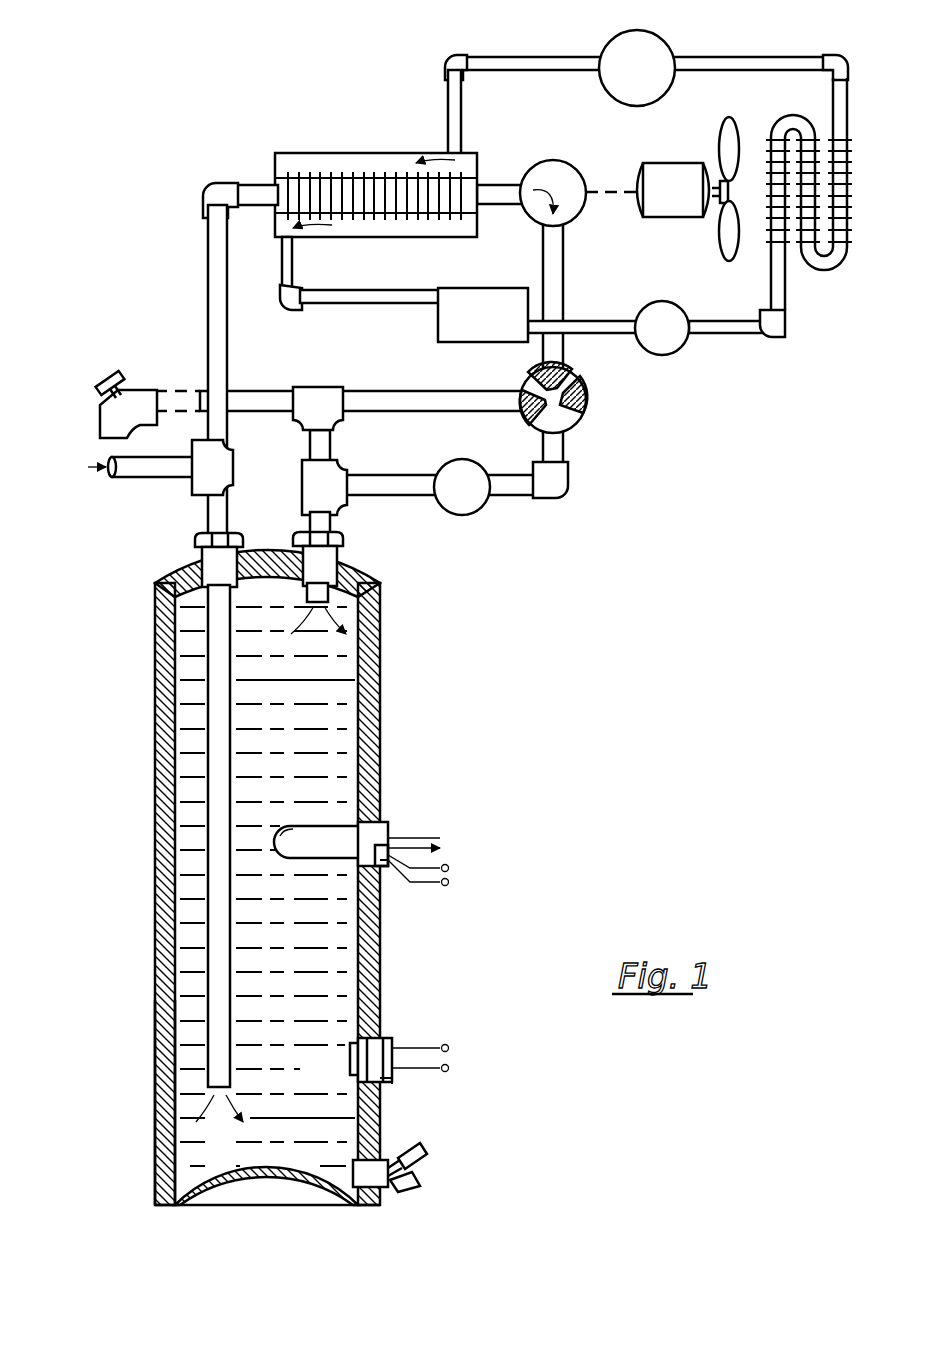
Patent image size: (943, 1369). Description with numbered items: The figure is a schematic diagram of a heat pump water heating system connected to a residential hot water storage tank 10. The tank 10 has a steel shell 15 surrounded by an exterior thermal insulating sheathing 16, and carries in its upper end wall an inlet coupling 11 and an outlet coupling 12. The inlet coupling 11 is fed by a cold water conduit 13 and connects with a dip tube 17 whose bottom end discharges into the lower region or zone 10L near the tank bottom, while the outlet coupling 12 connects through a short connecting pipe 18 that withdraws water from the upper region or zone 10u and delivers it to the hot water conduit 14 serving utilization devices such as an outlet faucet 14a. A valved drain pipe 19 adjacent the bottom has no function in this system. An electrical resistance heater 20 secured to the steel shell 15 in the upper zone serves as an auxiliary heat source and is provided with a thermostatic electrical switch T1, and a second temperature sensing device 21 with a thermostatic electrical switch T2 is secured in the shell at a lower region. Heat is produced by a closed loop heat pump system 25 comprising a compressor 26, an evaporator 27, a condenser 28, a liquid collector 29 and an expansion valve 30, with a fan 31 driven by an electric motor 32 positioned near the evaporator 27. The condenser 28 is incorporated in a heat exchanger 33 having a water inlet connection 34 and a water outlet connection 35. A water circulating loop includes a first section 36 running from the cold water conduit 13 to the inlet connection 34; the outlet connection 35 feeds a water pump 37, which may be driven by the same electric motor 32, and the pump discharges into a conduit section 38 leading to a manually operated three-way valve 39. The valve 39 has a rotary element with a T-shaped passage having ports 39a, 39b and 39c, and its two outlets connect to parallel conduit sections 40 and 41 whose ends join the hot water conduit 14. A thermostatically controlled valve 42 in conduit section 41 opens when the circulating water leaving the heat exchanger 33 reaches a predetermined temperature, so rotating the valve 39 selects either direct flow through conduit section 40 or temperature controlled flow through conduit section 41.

The hot water storage tank 10 is at (152, 789).
The upper region or zone 10u is at (337, 687).
The lower region or zone 10L is at (210, 1133).
The inlet coupling 11 is at (218, 558).
The outlet coupling 12 is at (322, 557).
The cold water conduit 13 is at (170, 470).
The hot water conduit 14 is at (273, 400).
The outlet faucet 14a is at (137, 384).
The steel shell 15 is at (180, 852).
The exterior thermal insulating sheathing 16 is at (165, 1078).
The dip tube 17 is at (225, 897).
The connecting pipe 18 is at (331, 597).
The valved drain pipe 19 is at (396, 1186).
The electrical resistance heater 20 is at (286, 848).
The second temperature sensing device 21 is at (352, 1062).
The heat pump system 25 is at (528, 52).
The compressor 26 is at (664, 46).
The evaporator 27 is at (820, 262).
The condenser 28 is at (404, 185).
The liquid collector 29 is at (450, 295).
The expansion valve 30 is at (678, 340).
The fan 31 is at (719, 142).
The electric motor 32 is at (683, 166).
The heat exchanger 33 is at (366, 150).
The water inlet connection 34 is at (265, 190).
The water outlet connection 35 is at (503, 185).
The first section 36 is at (215, 280).
The water pump 37 is at (556, 168).
The conduit section 38 is at (546, 262).
The three-way valve 39 is at (567, 404).
The port 39a is at (571, 386).
The port 39b is at (531, 381).
The port 39c is at (571, 431).
The conduit section 40 is at (432, 392).
The conduit section 41 is at (380, 475).
The thermostatically controlled valve 42 is at (474, 506).
The temperature sensor or thermostatic electrical switch T1 is at (386, 868).
The thermostatic electrical switch T2 is at (386, 1085).